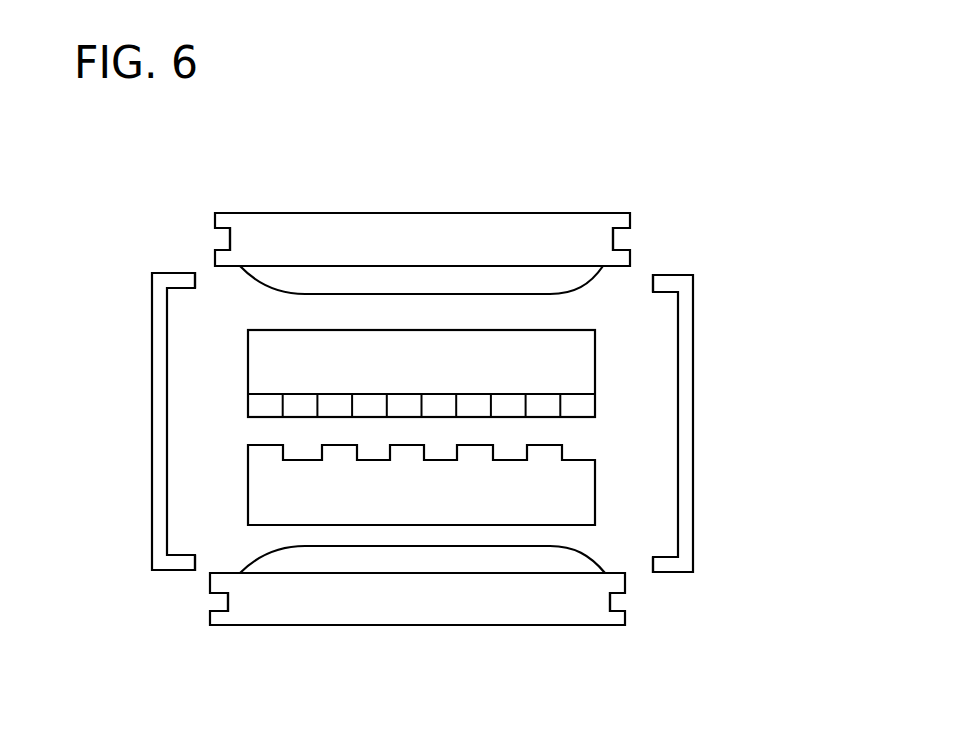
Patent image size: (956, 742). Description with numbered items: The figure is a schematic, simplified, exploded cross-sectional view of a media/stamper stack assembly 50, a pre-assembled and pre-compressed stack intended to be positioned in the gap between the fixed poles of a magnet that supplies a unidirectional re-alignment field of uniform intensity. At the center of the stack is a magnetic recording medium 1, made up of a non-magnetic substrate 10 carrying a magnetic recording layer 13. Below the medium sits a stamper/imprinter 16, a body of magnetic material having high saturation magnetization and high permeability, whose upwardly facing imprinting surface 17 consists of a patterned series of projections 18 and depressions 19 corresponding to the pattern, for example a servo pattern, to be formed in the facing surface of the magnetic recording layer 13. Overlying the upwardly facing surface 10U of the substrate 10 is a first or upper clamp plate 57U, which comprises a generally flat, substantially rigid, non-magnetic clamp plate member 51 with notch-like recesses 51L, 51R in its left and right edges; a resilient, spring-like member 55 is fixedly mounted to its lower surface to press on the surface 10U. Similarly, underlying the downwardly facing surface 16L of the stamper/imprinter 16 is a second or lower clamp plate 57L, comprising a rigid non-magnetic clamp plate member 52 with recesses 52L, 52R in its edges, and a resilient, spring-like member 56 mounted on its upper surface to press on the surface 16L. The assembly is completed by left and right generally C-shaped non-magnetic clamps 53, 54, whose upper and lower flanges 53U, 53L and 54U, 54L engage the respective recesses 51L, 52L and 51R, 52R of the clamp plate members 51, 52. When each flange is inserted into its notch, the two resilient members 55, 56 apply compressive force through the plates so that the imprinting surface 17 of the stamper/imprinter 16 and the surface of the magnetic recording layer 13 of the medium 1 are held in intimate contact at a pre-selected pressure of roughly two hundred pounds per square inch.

The magnetic recording medium 1 is at (505, 377).
The non-magnetic substrate 10 is at (428, 377).
The upwardly facing surface of substrate 10U is at (541, 330).
The magnetic recording layer 13 is at (597, 405).
The stamper/imprinter 16 is at (600, 500).
The downwardly facing surface of stamper/imprinter 16L is at (597, 526).
The imprinting surface 17 is at (244, 425).
The projections 18 is at (472, 446).
The depressions 19 is at (510, 461).
The media/stamper stack assembly 50 is at (718, 216).
The clamp plate member 51 is at (426, 252).
The left notch-like recess of upper clamp plate member 51L is at (222, 237).
The right notch-like recess of upper clamp plate member 51R is at (620, 238).
The clamp plate member 52 is at (411, 614).
The left notch-like recess of lower clamp plate member 52L is at (214, 600).
The right notch-like recess of lower clamp plate member 52R is at (627, 600).
The left C-shaped clamp 53 is at (146, 436).
The upper flange of left clamp 53U is at (165, 272).
The lower flange of left clamp 53L is at (165, 572).
The right C-shaped clamp 54 is at (693, 425).
The upper flange of right clamp 54U is at (676, 275).
The lower flange of right clamp 54L is at (683, 573).
The resilient spring-like member 55 is at (483, 293).
The resilient spring-like member 56 is at (493, 547).
The upper clamp plate 57U is at (323, 206).
The lower clamp plate 57L is at (331, 627).